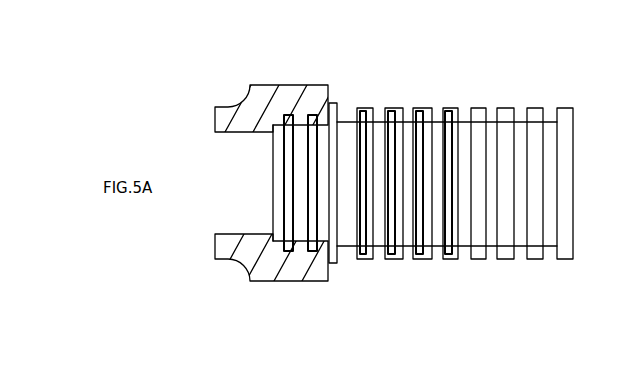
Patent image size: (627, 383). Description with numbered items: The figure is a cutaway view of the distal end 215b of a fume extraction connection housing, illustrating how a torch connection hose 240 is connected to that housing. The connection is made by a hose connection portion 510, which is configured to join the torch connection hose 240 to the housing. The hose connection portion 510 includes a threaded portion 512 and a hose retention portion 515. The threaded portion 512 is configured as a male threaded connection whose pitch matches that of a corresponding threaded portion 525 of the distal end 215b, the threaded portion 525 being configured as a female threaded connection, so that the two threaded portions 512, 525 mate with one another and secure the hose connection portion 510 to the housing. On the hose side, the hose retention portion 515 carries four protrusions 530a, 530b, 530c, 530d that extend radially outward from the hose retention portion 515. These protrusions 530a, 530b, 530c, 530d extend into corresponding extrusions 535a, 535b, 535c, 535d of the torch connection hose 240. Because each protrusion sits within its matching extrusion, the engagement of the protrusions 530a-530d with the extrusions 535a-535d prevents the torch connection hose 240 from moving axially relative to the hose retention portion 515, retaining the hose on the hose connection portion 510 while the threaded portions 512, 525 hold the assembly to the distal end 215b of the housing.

The distal end 215b is at (250, 85).
The hose connection portion 510 is at (334, 258).
The threaded portion 512 is at (288, 116).
The threaded portion 525 is at (329, 93).
The hose retention portion 515 is at (350, 240).
The protrusion 530a is at (449, 110).
The protrusion 530b is at (419, 110).
The protrusion 530c is at (391, 110).
The protrusion 530d is at (362, 110).
The extrusion 535a is at (450, 260).
The extrusion 535b is at (423, 260).
The extrusion 535c is at (397, 260).
The extrusion 535d is at (363, 260).
The torch connection hose 240 is at (573, 143).